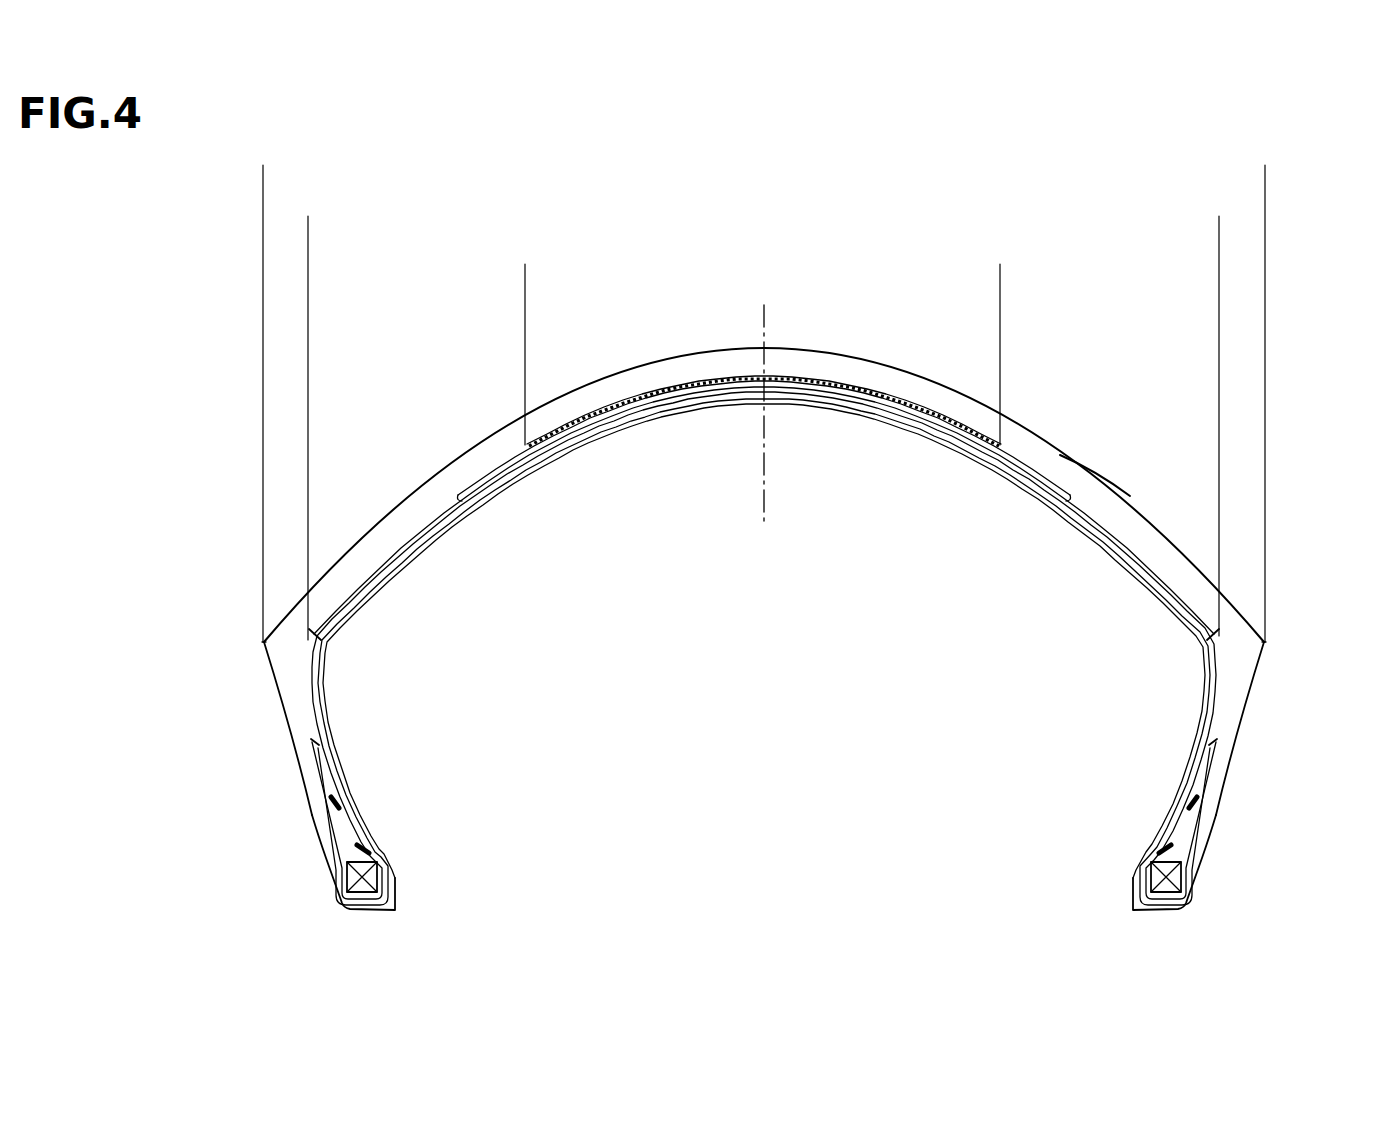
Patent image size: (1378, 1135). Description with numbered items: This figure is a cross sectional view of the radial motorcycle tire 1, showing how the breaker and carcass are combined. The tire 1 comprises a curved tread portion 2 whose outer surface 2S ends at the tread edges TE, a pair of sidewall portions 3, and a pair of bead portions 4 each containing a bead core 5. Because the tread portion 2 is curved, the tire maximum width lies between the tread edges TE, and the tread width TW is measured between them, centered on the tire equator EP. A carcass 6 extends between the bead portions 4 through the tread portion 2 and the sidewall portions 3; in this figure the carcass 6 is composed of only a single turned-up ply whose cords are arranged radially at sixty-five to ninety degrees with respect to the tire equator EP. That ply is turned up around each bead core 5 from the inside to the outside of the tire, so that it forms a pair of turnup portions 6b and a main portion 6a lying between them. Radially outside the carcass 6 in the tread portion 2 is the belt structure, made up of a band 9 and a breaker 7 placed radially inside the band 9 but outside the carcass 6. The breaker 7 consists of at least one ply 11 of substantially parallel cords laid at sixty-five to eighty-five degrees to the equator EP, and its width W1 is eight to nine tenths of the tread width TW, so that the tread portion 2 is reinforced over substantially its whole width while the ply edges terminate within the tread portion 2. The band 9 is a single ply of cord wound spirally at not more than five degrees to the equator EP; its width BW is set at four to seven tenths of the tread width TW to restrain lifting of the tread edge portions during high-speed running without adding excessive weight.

The radial motorcycle tire 1 is at (1285, 502).
The tread portion 2 is at (1029, 397).
The tread surface 2S is at (1075, 461).
The sidewall portion 3 is at (289, 740).
The bead portion 4 is at (328, 864).
The bead core 5 is at (380, 885).
The carcass 6 is at (1040, 726).
The main portion 6a is at (1210, 707).
The turnup portion 6b is at (1212, 780).
The breaker 7 is at (936, 562).
The band 9 is at (915, 403).
The breaker ply 11 is at (1030, 487).
The tread edge TE is at (262, 641).
The tread width TW is at (263, 175).
The breaker ply width W1 is at (308, 226).
The band width BW is at (525, 274).
The tire equator EP is at (767, 431).